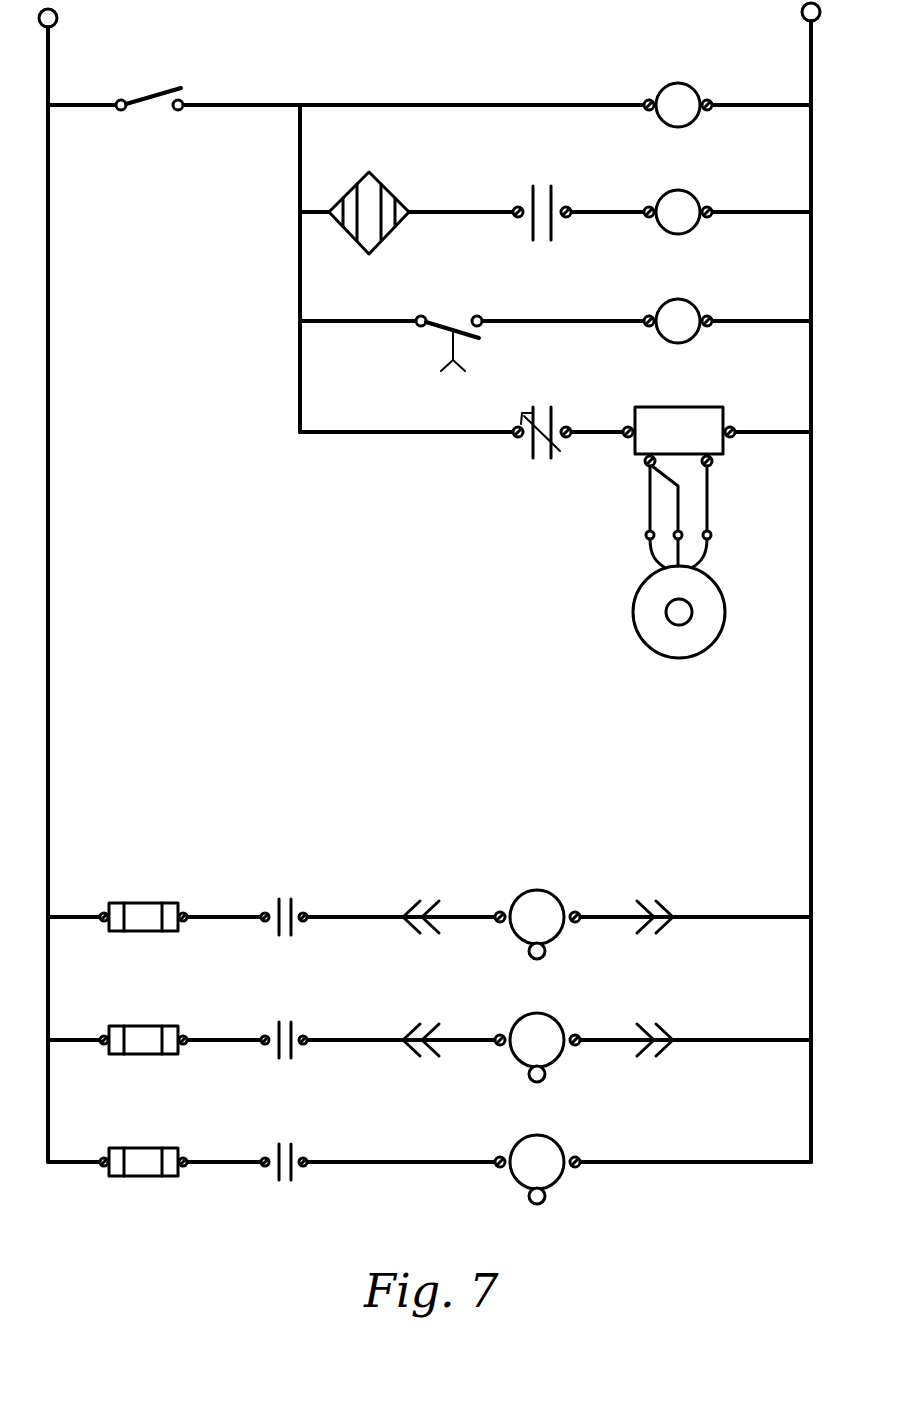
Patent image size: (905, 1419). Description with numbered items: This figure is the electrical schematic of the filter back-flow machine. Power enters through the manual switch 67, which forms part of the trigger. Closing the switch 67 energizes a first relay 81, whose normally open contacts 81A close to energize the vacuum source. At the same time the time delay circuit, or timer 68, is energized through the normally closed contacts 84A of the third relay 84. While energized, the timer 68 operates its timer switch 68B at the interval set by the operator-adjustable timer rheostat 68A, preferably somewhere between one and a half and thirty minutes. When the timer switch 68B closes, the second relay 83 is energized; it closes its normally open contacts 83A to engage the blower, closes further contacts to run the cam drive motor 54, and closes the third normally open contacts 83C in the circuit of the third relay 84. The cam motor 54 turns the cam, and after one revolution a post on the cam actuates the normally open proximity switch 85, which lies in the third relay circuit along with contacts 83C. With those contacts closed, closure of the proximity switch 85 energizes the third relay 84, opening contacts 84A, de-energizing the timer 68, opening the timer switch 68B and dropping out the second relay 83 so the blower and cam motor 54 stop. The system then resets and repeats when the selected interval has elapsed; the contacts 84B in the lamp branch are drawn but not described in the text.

The switch 67 is at (155, 92).
The first relay 81 is at (686, 81).
The proximity switch 85 is at (378, 181).
The third normally open contacts 83C is at (551, 186).
The third relay 84 is at (688, 190).
The second relay 83 is at (688, 299).
The timer switch 68B is at (452, 349).
The normally closed contacts 84A is at (551, 407).
The time delay circuit 68 is at (700, 406).
The timer rheostat 68A is at (634, 620).
The normally open contacts 81A is at (291, 899).
The normally open contacts 83A is at (291, 1022).
The relay contact 84B is at (291, 1144).
The cam drive motor 54 is at (552, 1136).